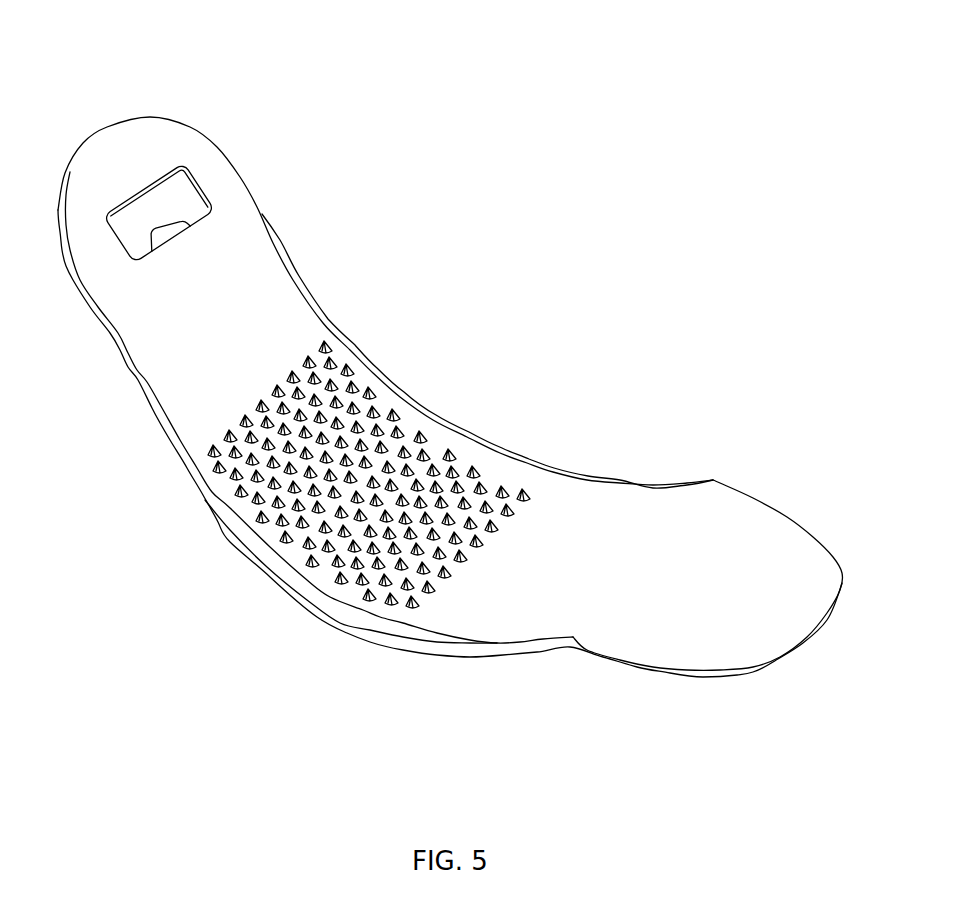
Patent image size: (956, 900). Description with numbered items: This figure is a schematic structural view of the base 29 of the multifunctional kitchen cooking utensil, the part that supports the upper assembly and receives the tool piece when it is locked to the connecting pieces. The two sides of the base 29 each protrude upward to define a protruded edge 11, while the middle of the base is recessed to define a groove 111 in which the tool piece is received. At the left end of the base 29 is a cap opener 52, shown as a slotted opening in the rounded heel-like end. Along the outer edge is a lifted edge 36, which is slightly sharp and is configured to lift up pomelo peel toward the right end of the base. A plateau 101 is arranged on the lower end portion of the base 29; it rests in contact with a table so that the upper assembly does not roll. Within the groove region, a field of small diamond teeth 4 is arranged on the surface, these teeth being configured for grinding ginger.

The diamond teeth 4 is at (433, 468).
The protruded edge 11 is at (372, 373).
The base 29 is at (245, 280).
The lifted edge 36 is at (745, 670).
The cap opener 52 is at (181, 190).
The plateau 101 is at (247, 557).
The groove 111 is at (444, 508).